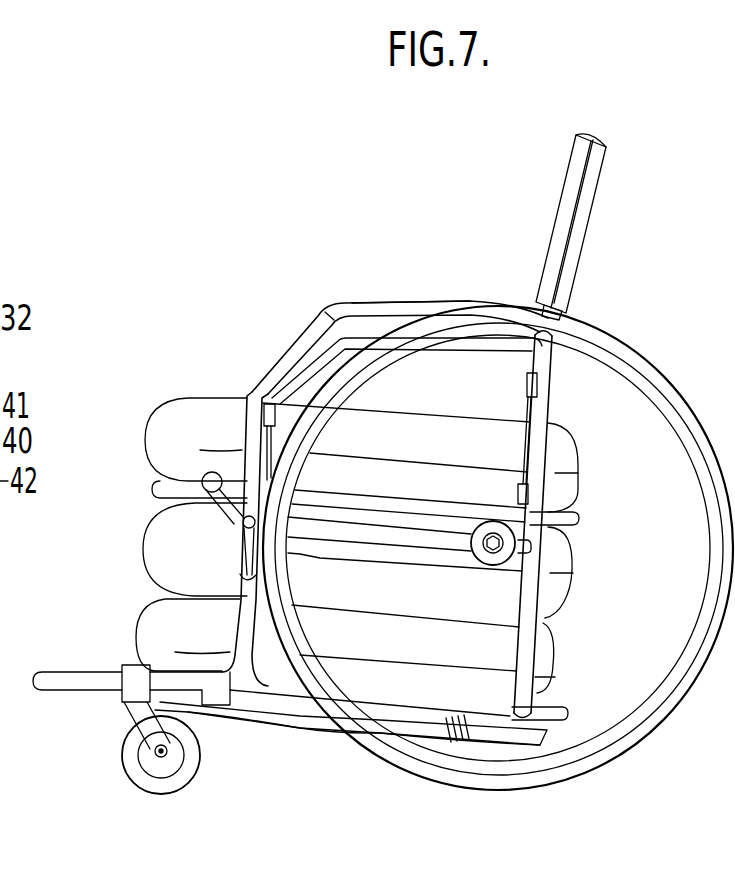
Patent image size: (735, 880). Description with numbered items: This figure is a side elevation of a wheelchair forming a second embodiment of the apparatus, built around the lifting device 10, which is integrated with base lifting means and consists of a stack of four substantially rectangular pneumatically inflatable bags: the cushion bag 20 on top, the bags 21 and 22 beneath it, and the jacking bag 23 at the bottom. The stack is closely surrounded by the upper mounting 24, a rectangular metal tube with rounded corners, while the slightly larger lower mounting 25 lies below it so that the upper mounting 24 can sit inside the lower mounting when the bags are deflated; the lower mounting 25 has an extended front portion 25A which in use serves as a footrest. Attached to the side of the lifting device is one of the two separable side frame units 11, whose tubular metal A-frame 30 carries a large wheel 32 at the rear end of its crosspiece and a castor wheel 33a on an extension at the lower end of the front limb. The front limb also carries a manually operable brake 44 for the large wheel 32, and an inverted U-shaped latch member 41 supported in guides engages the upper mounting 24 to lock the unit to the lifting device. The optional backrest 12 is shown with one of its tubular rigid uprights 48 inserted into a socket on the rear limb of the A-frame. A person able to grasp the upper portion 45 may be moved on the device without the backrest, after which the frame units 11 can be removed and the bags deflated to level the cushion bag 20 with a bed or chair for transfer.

The lifting device 10 is at (135, 524).
The side frame unit 11 is at (270, 340).
The backrest 12 is at (610, 228).
The cushion bag 20 is at (212, 438).
The inflatable bag 21 is at (212, 538).
The inflatable bag 22 is at (197, 639).
The jacking bag 23 is at (280, 722).
The upper mounting 24 is at (575, 516).
The lower mounting 25 is at (622, 686).
The extended front portion 25A is at (63, 687).
The A-frame 30 is at (390, 312).
The large wheel 32 is at (713, 522).
The castor wheel 33a is at (128, 762).
The latch member 41 is at (450, 351).
The brake 44 is at (252, 535).
The upper portion 45 is at (342, 310).
The upright 48 is at (588, 182).